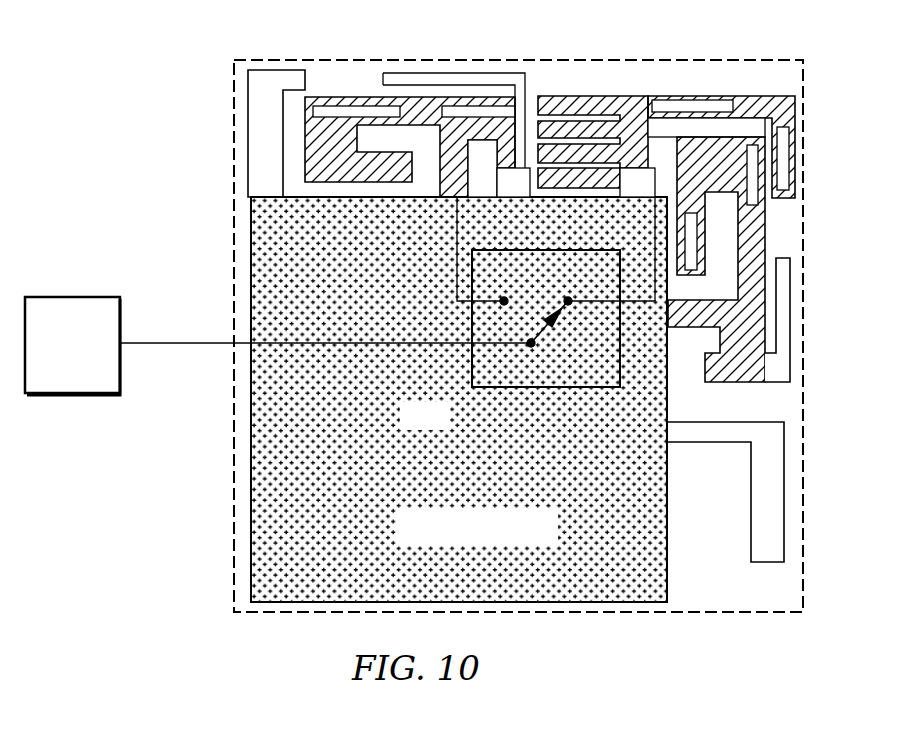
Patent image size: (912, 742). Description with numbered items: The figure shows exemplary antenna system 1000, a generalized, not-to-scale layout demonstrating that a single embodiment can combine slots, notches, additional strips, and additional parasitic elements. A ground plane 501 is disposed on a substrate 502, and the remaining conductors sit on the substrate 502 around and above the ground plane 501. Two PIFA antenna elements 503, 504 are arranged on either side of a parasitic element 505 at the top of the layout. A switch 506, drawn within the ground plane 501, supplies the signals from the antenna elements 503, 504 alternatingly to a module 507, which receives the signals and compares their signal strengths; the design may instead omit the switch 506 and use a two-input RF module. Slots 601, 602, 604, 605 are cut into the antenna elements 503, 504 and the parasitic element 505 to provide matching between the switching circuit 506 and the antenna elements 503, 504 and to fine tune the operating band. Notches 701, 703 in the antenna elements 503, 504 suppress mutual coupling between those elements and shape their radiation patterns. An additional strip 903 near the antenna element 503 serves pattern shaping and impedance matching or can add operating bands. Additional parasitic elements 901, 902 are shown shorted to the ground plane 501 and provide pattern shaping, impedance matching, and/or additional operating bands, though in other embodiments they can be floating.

The antenna system 1000 is at (171, 214).
The ground plane 501 is at (550, 536).
The substrate 502 is at (722, 572).
The PIFA antenna element 503 is at (362, 117).
The PIFA antenna element 504 is at (767, 248).
The parasitic element 505 is at (610, 95).
The switch 506 is at (507, 387).
The module 507 is at (90, 354).
The slot 601 is at (345, 110).
The slot 602 is at (683, 105).
The slot 604 is at (753, 203).
The slot 605 is at (781, 165).
The notch 701 is at (527, 110).
The notch 703 is at (695, 267).
The parasitic element 901 is at (751, 497).
The parasitic element 902 is at (248, 98).
The strip 903 is at (463, 72).